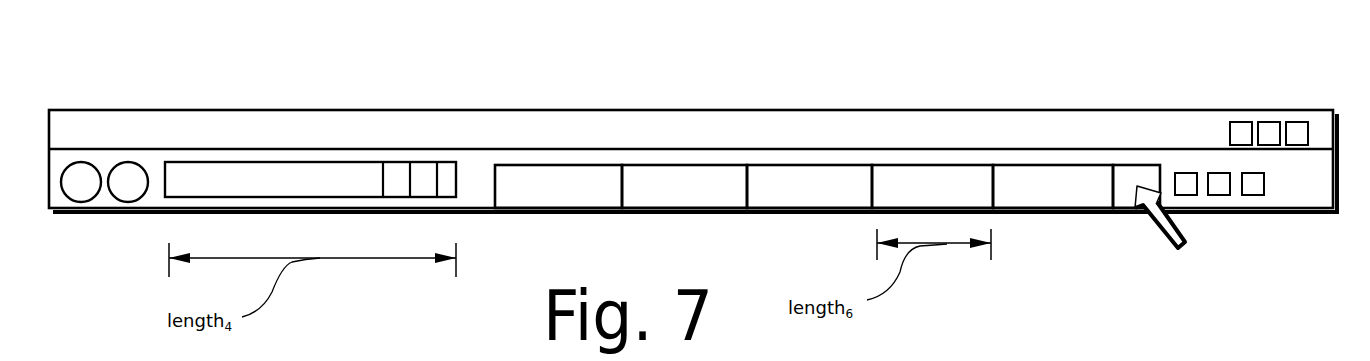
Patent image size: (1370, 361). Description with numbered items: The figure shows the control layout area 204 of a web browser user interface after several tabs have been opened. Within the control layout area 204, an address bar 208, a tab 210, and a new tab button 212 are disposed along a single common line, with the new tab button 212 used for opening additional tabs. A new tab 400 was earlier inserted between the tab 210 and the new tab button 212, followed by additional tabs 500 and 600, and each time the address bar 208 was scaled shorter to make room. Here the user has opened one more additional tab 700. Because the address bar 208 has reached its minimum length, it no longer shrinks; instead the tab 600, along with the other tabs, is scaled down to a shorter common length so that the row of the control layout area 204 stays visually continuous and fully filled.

The control layout area 204 is at (135, 32).
The address bar 208 is at (310, 162).
The tab 210 is at (558, 165).
The new tab 400 is at (685, 165).
The additional tab 500 is at (810, 165).
The additional tab 600 is at (933, 165).
The additional tab 700 is at (1052, 165).
The new tab button 212 is at (1142, 165).